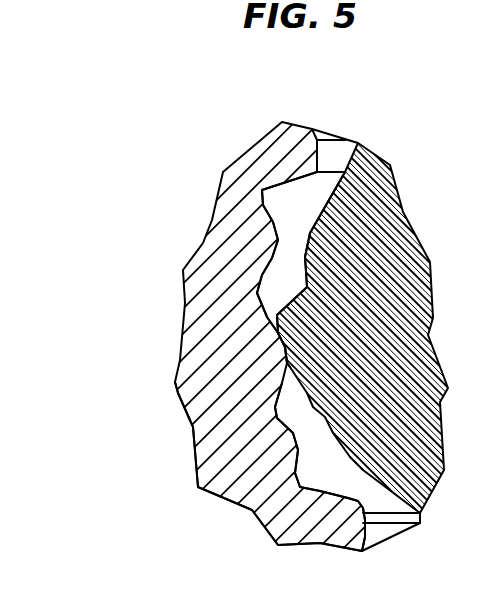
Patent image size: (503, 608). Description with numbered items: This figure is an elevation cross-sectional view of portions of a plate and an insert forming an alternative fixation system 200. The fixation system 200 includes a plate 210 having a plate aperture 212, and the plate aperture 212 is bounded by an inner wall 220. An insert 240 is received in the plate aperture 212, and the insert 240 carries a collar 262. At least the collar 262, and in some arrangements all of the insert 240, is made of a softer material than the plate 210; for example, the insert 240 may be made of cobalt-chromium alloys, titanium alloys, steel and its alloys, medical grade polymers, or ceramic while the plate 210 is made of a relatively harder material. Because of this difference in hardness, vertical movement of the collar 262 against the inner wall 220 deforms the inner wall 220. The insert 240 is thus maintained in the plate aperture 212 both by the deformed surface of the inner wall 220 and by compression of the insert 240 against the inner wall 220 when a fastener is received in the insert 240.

The fixation system 200 is at (86, 161).
The plate 210 is at (229, 130).
The plate aperture 212 is at (347, 149).
The inner wall 220 is at (272, 413).
The insert 240 is at (288, 210).
The collar 262 is at (262, 339).